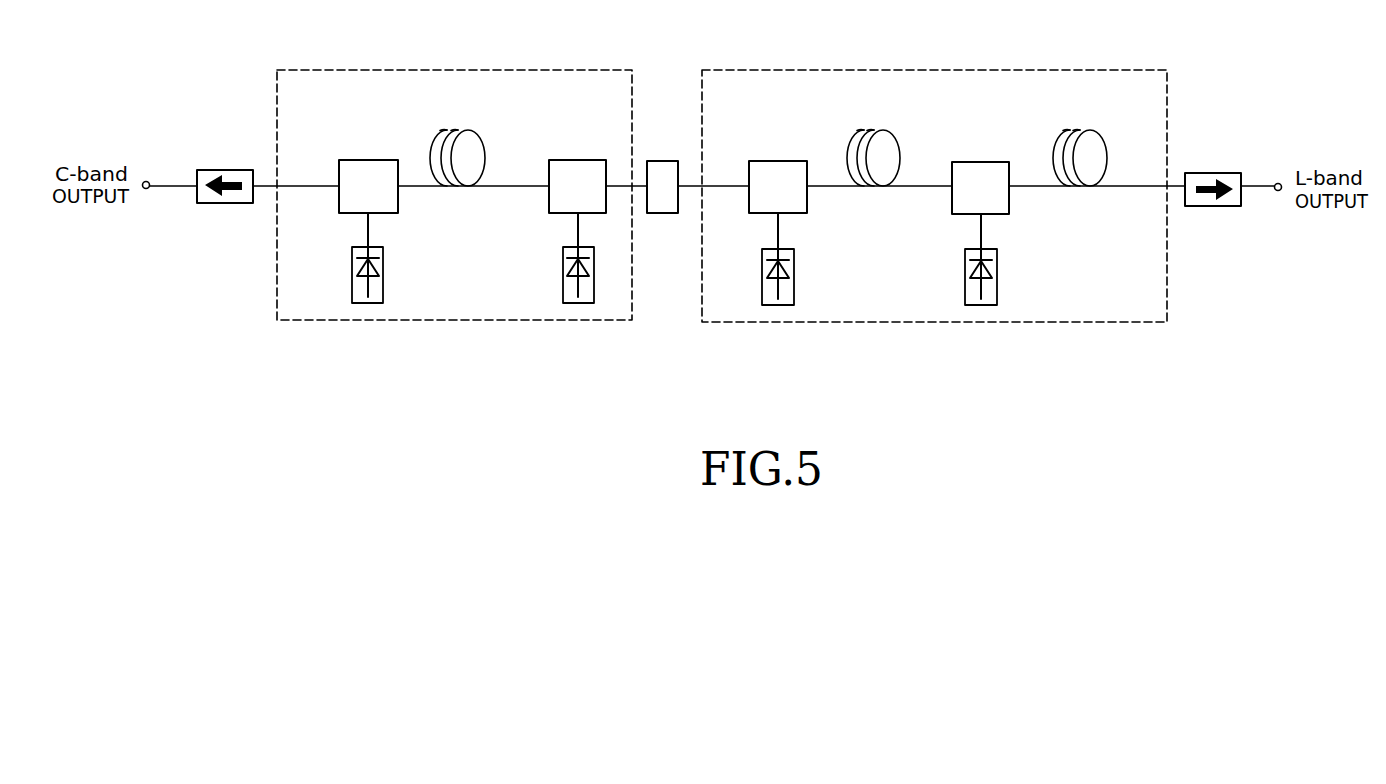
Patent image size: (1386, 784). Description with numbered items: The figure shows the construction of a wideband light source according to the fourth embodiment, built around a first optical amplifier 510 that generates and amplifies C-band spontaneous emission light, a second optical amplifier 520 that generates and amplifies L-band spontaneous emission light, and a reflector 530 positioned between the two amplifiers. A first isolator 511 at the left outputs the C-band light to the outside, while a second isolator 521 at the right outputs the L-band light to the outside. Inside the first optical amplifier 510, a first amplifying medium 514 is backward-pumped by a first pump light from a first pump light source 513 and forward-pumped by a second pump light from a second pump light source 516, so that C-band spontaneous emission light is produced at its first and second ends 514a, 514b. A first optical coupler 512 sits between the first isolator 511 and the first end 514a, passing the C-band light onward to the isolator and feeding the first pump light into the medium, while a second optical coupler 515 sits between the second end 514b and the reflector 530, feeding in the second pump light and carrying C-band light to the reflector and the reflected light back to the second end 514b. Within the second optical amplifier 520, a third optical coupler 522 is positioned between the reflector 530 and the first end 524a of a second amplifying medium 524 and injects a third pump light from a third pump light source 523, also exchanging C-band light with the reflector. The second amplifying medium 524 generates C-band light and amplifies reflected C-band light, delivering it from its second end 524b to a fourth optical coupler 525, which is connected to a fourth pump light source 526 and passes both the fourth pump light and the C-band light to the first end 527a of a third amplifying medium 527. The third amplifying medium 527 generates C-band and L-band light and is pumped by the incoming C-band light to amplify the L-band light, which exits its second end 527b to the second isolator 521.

The first optical amplifier 510 is at (430, 70).
The first isolator 511 is at (228, 170).
The first optical coupler 512 is at (367, 160).
The first pump light source 513 is at (352, 277).
The first amplifying medium 514 is at (530, 231).
The first end of the first amplifying medium 514a is at (467, 193).
The second end of the first amplifying medium 514b is at (539, 193).
The second optical coupler 515 is at (577, 160).
The second pump light source 516 is at (563, 277).
The second optical amplifier 520 is at (965, 70).
The second isolator 521 is at (1211, 173).
The third optical coupler 522 is at (777, 161).
The third pump light source 523 is at (762, 278).
The second amplifying medium 524 is at (940, 231).
The first end of the second amplifying medium 524a is at (875, 193).
The second end of the second amplifying medium 524b is at (948, 193).
The fourth optical coupler 525 is at (980, 162).
The fourth pump light source 526 is at (965, 278).
The third amplifying medium 527 is at (1145, 231).
The first end of the third amplifying medium 527a is at (1082, 193).
The second end of the third amplifying medium 527b is at (1153, 193).
The reflector 530 is at (660, 161).